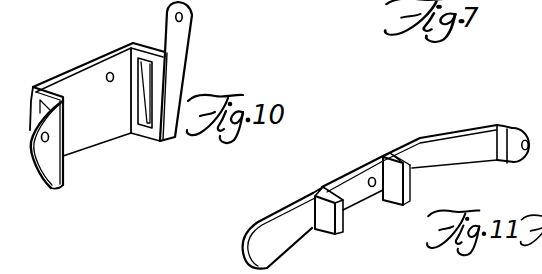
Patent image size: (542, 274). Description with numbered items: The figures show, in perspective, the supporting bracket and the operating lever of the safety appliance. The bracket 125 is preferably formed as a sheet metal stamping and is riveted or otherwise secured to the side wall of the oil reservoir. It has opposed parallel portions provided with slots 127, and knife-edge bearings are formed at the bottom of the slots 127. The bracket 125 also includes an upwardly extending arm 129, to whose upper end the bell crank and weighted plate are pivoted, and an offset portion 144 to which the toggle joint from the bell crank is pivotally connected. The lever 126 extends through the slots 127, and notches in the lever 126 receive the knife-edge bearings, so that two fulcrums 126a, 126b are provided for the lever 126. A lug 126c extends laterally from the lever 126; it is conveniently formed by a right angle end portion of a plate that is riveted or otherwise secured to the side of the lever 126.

In FIG. 10, the bracket 125 is at (97, 72).
In FIG. 10, the slots 127 is at (35, 108).
In FIG. 10, the arm 129 is at (180, 31).
In FIG. 10, the offset portion 144 is at (53, 168).
In FIG. 11, the lever 126 is at (420, 139).
In FIG. 11, the fulcrum 126a is at (324, 189).
In FIG. 11, the fulcrum 126b is at (410, 168).
In FIG. 11, the lug 126c is at (399, 197).